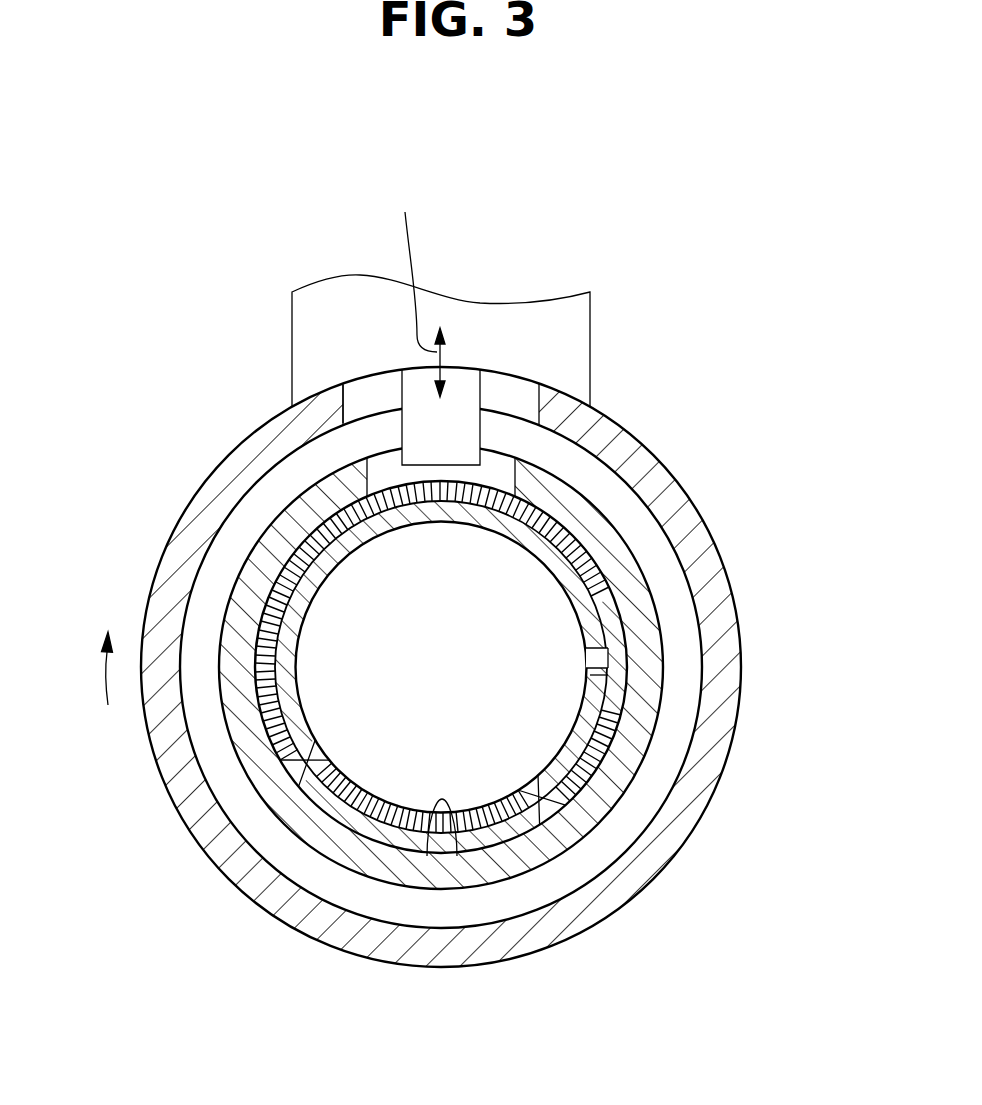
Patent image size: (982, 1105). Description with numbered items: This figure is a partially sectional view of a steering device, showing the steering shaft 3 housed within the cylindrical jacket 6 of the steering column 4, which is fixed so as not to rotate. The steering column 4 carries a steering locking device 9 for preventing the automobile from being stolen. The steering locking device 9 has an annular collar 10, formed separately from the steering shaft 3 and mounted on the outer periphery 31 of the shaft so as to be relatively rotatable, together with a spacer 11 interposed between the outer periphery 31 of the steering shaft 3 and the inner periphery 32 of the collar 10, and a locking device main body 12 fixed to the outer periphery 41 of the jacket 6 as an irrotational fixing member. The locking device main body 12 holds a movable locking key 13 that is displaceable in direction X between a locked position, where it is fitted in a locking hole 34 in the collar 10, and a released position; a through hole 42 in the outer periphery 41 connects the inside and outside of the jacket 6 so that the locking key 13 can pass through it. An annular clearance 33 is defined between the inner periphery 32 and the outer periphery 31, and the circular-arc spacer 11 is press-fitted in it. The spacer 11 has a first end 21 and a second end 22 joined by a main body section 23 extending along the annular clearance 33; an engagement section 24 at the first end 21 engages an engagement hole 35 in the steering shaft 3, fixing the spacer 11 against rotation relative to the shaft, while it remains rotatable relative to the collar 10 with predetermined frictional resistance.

The steering shaft 3 is at (542, 808).
The steering column 4 is at (718, 820).
The jacket 6 is at (703, 766).
The steering locking device 9 is at (722, 418).
The collar 10 is at (665, 620).
The spacer 11 is at (590, 578).
The locking device main body 12 is at (591, 329).
The locking key 13 is at (457, 413).
The first end 21 is at (590, 657).
The second end 22 is at (608, 727).
The main body section 23 is at (263, 684).
The engagement section 24 is at (602, 655).
The outer periphery 31 is at (493, 845).
The inner periphery 32 is at (427, 856).
The annular clearance 33 is at (617, 688).
The locking hole 34 is at (500, 473).
The engagement hole 35 is at (606, 675).
The outer periphery 41 is at (688, 490).
The through hole 42 is at (343, 400).